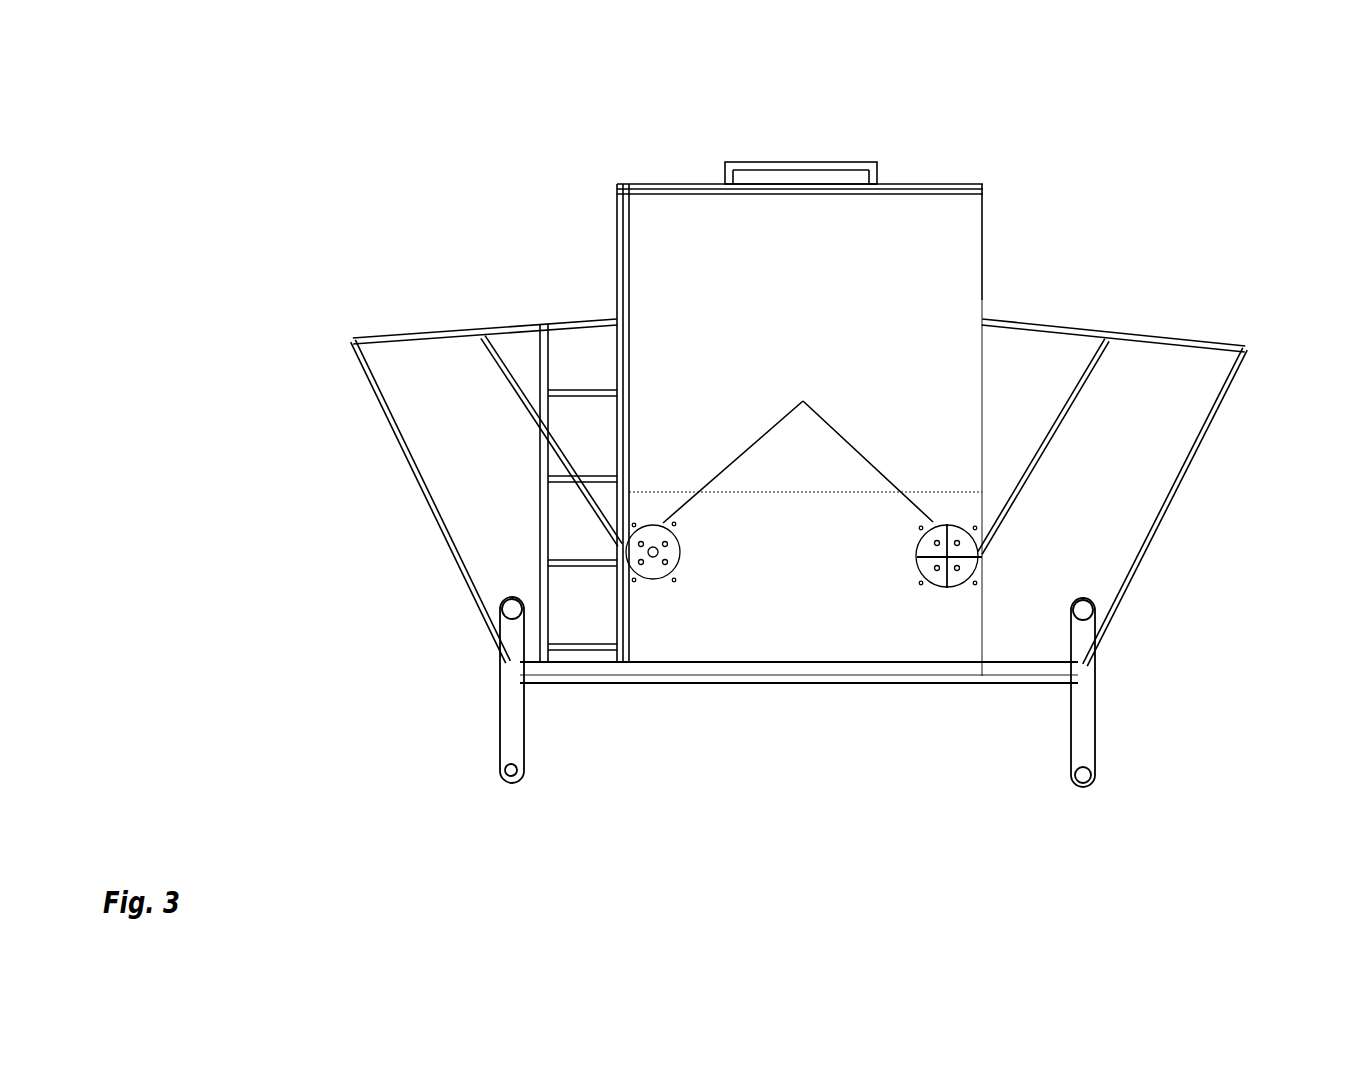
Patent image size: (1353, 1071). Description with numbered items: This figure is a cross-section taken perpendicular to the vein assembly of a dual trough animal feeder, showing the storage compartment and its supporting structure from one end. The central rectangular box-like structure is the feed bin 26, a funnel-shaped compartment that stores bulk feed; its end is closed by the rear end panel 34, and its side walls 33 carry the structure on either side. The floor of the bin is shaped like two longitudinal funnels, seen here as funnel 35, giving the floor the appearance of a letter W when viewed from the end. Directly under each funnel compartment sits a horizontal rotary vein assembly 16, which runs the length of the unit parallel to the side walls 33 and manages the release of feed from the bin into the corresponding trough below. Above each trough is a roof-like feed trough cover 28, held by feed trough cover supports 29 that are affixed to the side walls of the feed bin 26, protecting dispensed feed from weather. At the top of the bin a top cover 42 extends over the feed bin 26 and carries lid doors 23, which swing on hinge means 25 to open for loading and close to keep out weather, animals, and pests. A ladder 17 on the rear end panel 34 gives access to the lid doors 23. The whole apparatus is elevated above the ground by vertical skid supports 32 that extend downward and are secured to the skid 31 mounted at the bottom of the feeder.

The rotary vein assembly 16 is at (953, 557).
The ladder 17 is at (540, 522).
The lid doors 23 is at (815, 163).
The hinge means 25 is at (878, 181).
The feed bin 26 is at (798, 365).
The feed trough cover 28 is at (1165, 345).
The feed trough cover supports 29 is at (1080, 393).
The skid 31 is at (507, 767).
The vertical skid supports 32 is at (510, 710).
The side walls 33 is at (983, 403).
The rear end panel 34 is at (662, 263).
The funnel 35 is at (962, 504).
The top cover 42 is at (657, 187).